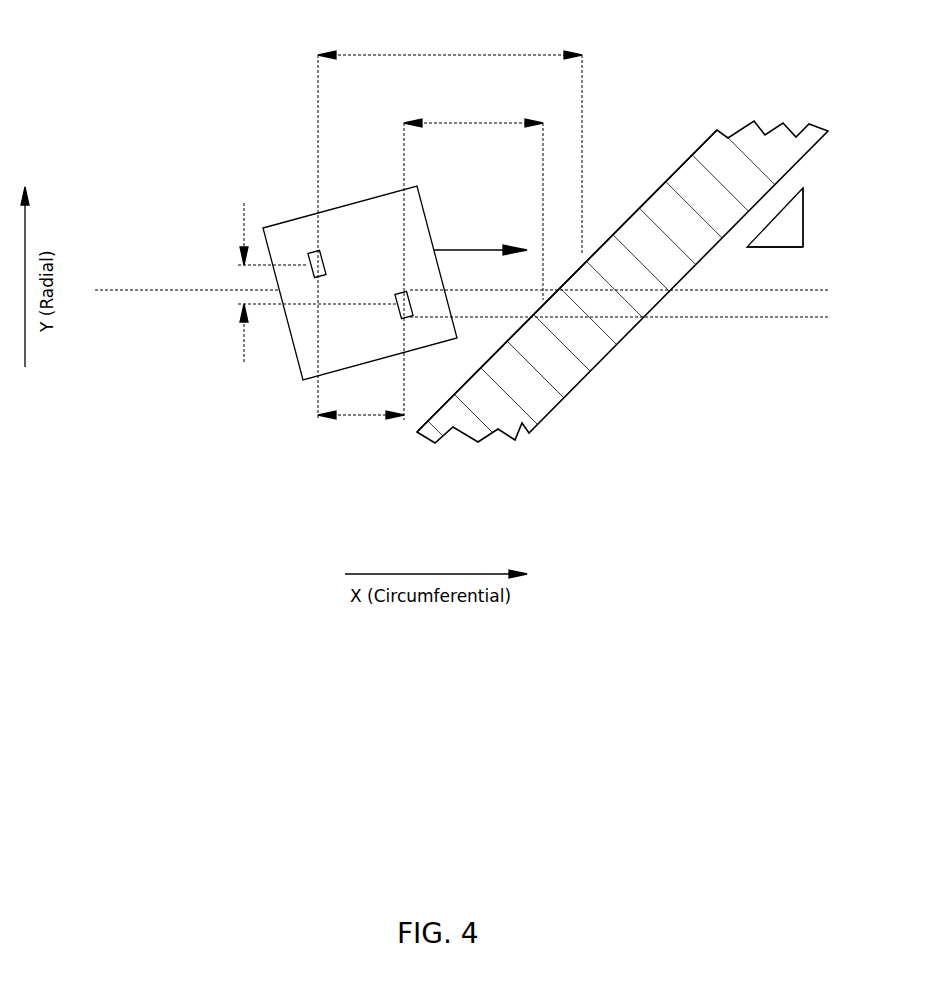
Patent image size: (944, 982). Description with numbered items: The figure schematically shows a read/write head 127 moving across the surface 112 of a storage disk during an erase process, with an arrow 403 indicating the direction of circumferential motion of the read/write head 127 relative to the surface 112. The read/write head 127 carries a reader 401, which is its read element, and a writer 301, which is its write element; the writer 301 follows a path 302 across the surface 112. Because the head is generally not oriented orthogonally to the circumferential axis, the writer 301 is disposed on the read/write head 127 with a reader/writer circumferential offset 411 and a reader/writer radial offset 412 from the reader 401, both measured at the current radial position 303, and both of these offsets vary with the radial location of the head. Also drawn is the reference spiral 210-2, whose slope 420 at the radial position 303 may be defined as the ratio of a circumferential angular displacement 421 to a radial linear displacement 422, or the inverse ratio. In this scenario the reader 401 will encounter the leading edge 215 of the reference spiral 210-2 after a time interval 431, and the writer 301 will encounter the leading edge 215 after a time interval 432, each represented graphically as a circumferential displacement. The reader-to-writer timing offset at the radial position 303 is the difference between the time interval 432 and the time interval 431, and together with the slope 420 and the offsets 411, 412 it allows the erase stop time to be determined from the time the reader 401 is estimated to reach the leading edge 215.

The surface 112 is at (404, 276).
The read/write head 127 is at (432, 232).
The leading edge 215 is at (705, 142).
The reference spiral 210-2 is at (493, 437).
The writer 301 is at (398, 315).
The path 302 is at (753, 318).
The radial position 303 is at (187, 288).
The reader 401 is at (327, 262).
The arrow 403 is at (472, 250).
The reader/writer circumferential offset 411 is at (365, 417).
The reader/writer radial offset 412 is at (238, 342).
The slope 420 is at (788, 214).
The circumferential angular displacement 421 is at (775, 247).
The radial linear displacement 422 is at (803, 222).
The time interval 431 is at (454, 55).
The time interval 432 is at (450, 122).